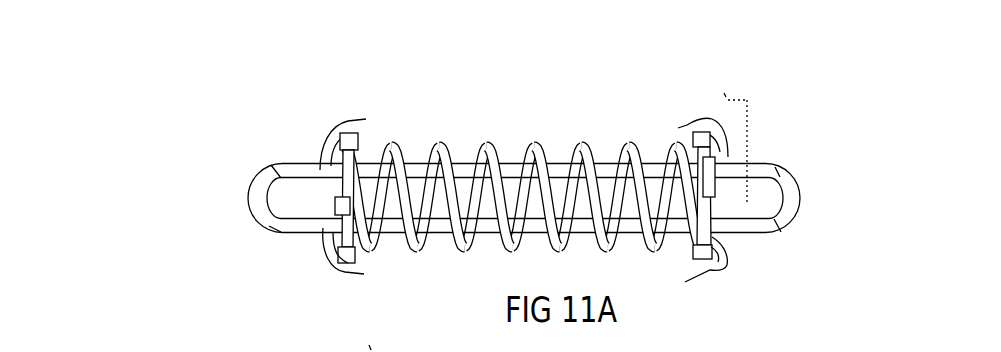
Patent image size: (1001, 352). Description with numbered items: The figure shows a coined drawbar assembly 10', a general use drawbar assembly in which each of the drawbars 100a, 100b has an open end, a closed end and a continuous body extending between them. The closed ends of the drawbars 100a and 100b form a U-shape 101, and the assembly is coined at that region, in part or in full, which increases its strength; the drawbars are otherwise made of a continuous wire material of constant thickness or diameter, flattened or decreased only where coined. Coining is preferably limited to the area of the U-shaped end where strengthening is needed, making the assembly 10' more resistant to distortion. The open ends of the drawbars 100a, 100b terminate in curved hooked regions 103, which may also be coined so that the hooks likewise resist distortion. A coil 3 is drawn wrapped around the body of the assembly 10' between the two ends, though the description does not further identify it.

The coined drawbar assembly 10' is at (54, 21).
The coil / heating wire 3 is at (490, 149).
The U-shape 101 is at (800, 186).
The drawbar 100a is at (294, 163).
The drawbar 100b is at (763, 163).
The curved hooked regions 103 is at (524, 206).